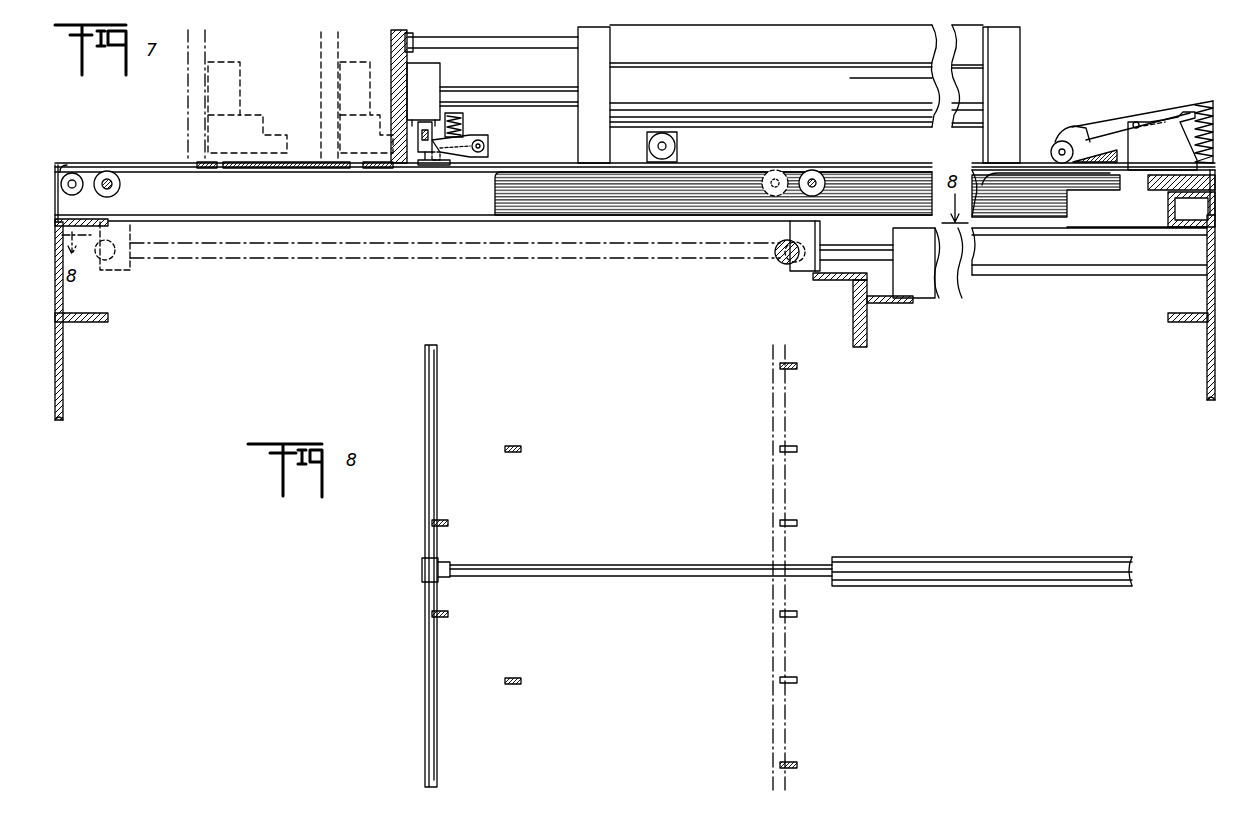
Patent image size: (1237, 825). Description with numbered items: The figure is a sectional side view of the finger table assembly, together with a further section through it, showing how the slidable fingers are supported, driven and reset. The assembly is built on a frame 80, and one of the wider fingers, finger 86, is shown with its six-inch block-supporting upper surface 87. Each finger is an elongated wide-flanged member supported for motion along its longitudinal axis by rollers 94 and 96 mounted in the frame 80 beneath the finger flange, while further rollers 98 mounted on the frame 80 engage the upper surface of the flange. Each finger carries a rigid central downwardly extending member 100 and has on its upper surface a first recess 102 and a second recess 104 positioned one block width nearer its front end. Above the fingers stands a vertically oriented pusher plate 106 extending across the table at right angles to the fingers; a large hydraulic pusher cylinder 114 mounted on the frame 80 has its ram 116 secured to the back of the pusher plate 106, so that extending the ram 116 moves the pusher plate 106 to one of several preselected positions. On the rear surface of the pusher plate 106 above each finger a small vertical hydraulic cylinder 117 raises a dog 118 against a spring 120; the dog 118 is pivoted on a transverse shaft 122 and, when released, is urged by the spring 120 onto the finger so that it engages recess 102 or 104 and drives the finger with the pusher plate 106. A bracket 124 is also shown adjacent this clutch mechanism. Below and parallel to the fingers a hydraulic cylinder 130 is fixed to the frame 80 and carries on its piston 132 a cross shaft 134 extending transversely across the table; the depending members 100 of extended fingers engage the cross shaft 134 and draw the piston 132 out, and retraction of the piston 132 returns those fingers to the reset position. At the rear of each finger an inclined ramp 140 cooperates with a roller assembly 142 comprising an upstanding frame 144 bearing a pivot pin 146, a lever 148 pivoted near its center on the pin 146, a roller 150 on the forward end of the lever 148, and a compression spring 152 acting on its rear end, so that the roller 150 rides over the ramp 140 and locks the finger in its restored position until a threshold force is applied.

In FIG. 7, the frame 80 is at (63, 343).
In FIG. 7, the finger 86 is at (960, 170).
In FIG. 7, the block-supporting upper surface 87 is at (120, 160).
In FIG. 7, the roller 94 is at (100, 190).
In FIG. 7, the roller 96 is at (812, 170).
In FIG. 7, the roller 98 is at (676, 146).
In FIG. 7, the downwardly extending member 100 is at (118, 268).
In FIG. 8, the downwardly extending member 100 is at (514, 445).
In FIG. 7, the first recess 102 is at (368, 168).
In FIG. 7, the second recess 104 is at (220, 167).
In FIG. 7, the pusher plate 106 is at (190, 92).
In FIG. 7, the hydraulic pusher cylinder 114 is at (795, 80).
In FIG. 7, the ram 116 is at (517, 92).
In FIG. 7, the vertical hydraulic cylinder 117 is at (225, 70).
In FIG. 7, the dog 118 is at (452, 160).
In FIG. 7, the spring 120 is at (462, 128).
In FIG. 7, the transverse shaft 122 is at (486, 152).
In FIG. 7, the bracket 124 is at (422, 160).
In FIG. 7, the hydraulic cylinder 130 is at (985, 272).
In FIG. 8, the hydraulic cylinder 130 is at (998, 562).
In FIG. 7, the piston 132 is at (245, 260).
In FIG. 8, the piston 132 is at (597, 572).
In FIG. 7, the cross shaft 134 is at (100, 268).
In FIG. 8, the cross shaft 134 is at (777, 416).
In FIG. 7, the inclined ramp 140 is at (1090, 158).
In FIG. 7, the roller assembly 142 is at (1106, 128).
In FIG. 7, the upstanding frame 144 is at (1150, 152).
In FIG. 7, the pivot pin 146 is at (1134, 122).
In FIG. 7, the lever 148 is at (1165, 113).
In FIG. 7, the roller 150 is at (1055, 145).
In FIG. 7, the compression spring 152 is at (1222, 115).